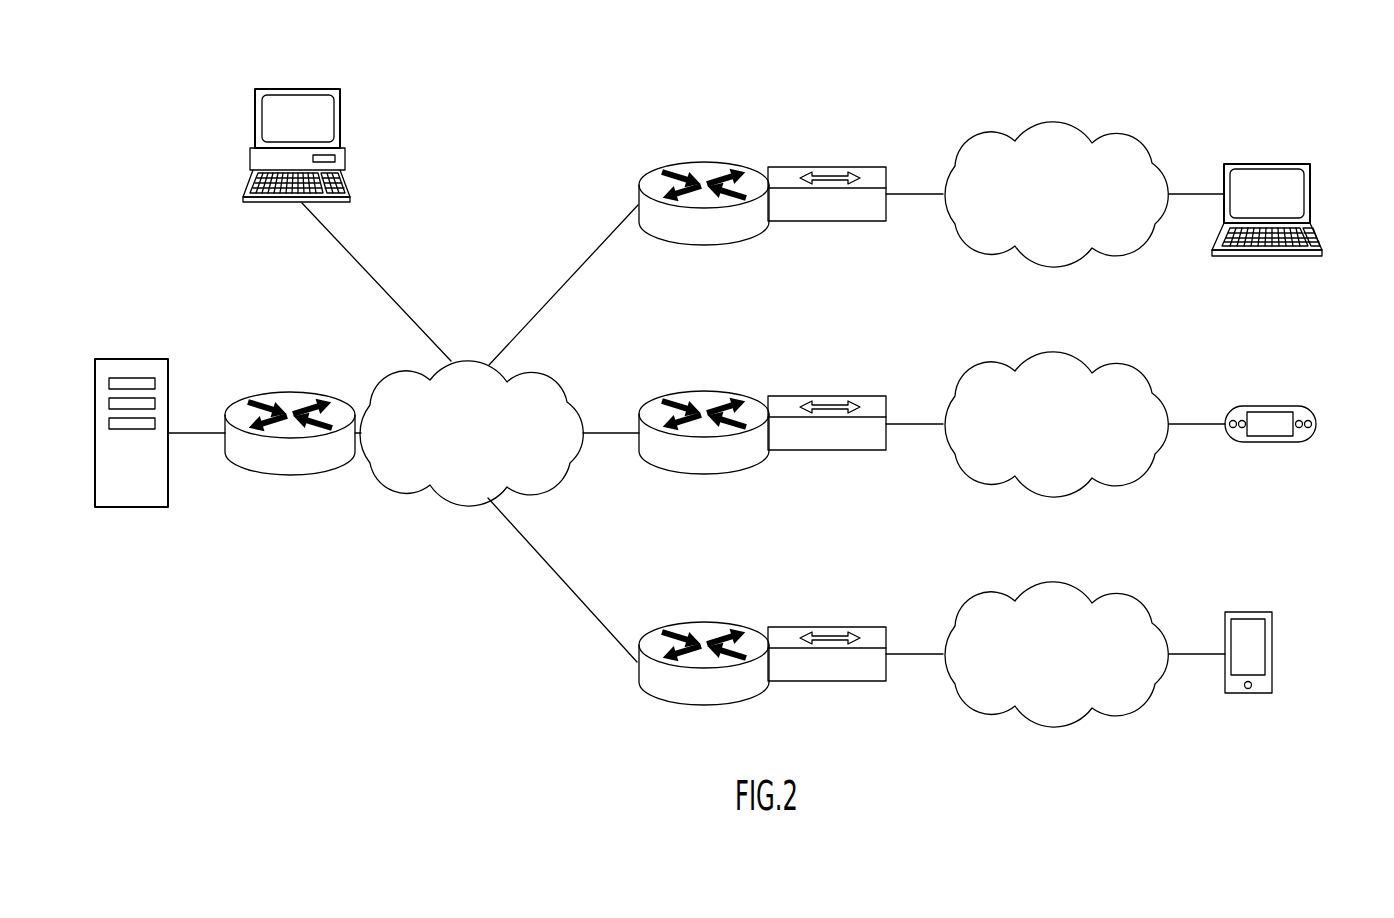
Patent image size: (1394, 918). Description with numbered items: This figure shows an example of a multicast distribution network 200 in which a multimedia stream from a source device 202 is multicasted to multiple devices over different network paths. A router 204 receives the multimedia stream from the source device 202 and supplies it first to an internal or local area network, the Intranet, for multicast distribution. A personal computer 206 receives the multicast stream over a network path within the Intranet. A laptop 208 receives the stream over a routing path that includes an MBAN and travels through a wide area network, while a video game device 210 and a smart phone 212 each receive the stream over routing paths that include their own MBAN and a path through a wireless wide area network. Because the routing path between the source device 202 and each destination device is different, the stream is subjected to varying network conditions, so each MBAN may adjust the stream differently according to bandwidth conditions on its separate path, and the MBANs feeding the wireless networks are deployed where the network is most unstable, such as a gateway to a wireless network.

The multicast distribution network 200 is at (372, 677).
The source device 202 is at (150, 358).
The router 204 is at (285, 390).
The personal computer 206 is at (295, 88).
The laptop 208 is at (1262, 164).
The video game device 210 is at (1268, 406).
The smart phone 212 is at (1249, 612).